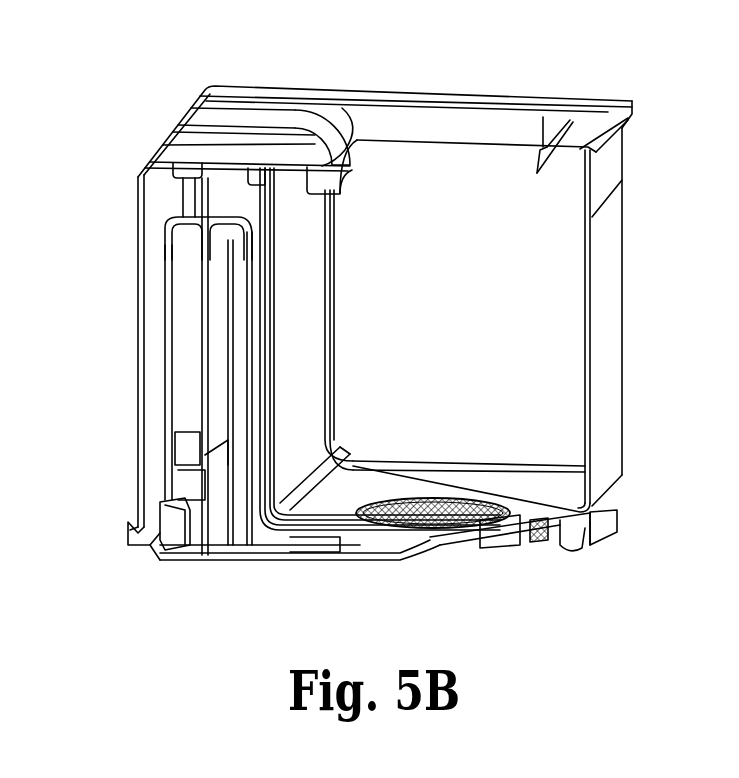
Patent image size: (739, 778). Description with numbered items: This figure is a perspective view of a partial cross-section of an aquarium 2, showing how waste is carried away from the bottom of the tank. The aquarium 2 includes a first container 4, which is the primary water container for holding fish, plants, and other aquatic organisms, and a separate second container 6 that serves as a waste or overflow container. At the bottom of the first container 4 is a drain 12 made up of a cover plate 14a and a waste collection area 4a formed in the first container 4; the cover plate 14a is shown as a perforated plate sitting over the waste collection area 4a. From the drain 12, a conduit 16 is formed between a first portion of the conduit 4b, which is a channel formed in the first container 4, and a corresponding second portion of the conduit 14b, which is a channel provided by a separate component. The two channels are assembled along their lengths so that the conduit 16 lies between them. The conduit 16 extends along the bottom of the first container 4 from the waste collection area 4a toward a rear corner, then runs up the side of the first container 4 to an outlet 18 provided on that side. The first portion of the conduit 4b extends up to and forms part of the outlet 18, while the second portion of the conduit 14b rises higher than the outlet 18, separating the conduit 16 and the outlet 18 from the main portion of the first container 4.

The aquarium 2 is at (148, 92).
The first container 4 is at (607, 240).
The waste collection area 4a is at (433, 537).
The first portion of the conduit 4b is at (247, 318).
The second container 6 is at (143, 462).
The drain 12 is at (460, 498).
The cover plate 14a is at (417, 523).
The second portion of the conduit 14b is at (268, 402).
The conduit 16 is at (257, 460).
The outlet 18 is at (213, 227).